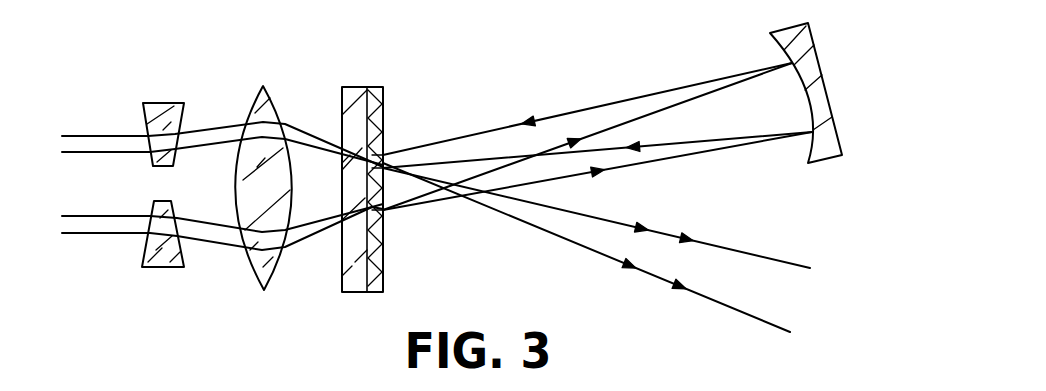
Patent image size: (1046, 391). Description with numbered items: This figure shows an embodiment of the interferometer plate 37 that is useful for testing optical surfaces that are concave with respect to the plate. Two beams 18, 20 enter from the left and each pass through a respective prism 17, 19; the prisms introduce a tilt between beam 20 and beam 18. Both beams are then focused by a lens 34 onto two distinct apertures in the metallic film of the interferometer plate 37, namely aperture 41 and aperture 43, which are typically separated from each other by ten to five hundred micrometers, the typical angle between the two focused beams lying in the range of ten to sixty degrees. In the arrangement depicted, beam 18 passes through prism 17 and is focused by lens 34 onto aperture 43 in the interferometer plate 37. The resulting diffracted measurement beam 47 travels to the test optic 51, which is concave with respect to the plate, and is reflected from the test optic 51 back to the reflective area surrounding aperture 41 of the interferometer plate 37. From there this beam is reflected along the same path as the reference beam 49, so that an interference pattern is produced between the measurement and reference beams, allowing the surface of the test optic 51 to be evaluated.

The prism 17 is at (152, 268).
The beam 18 is at (112, 238).
The prism 19 is at (170, 103).
The beam 20 is at (108, 134).
The lens 34 is at (264, 87).
The interferometer plate 37 is at (353, 87).
The aperture 41 is at (385, 150).
The aperture 43 is at (385, 213).
The diffracted measurement beam 47 is at (553, 114).
The reference beam 49 is at (690, 292).
The test optic 51 is at (825, 161).